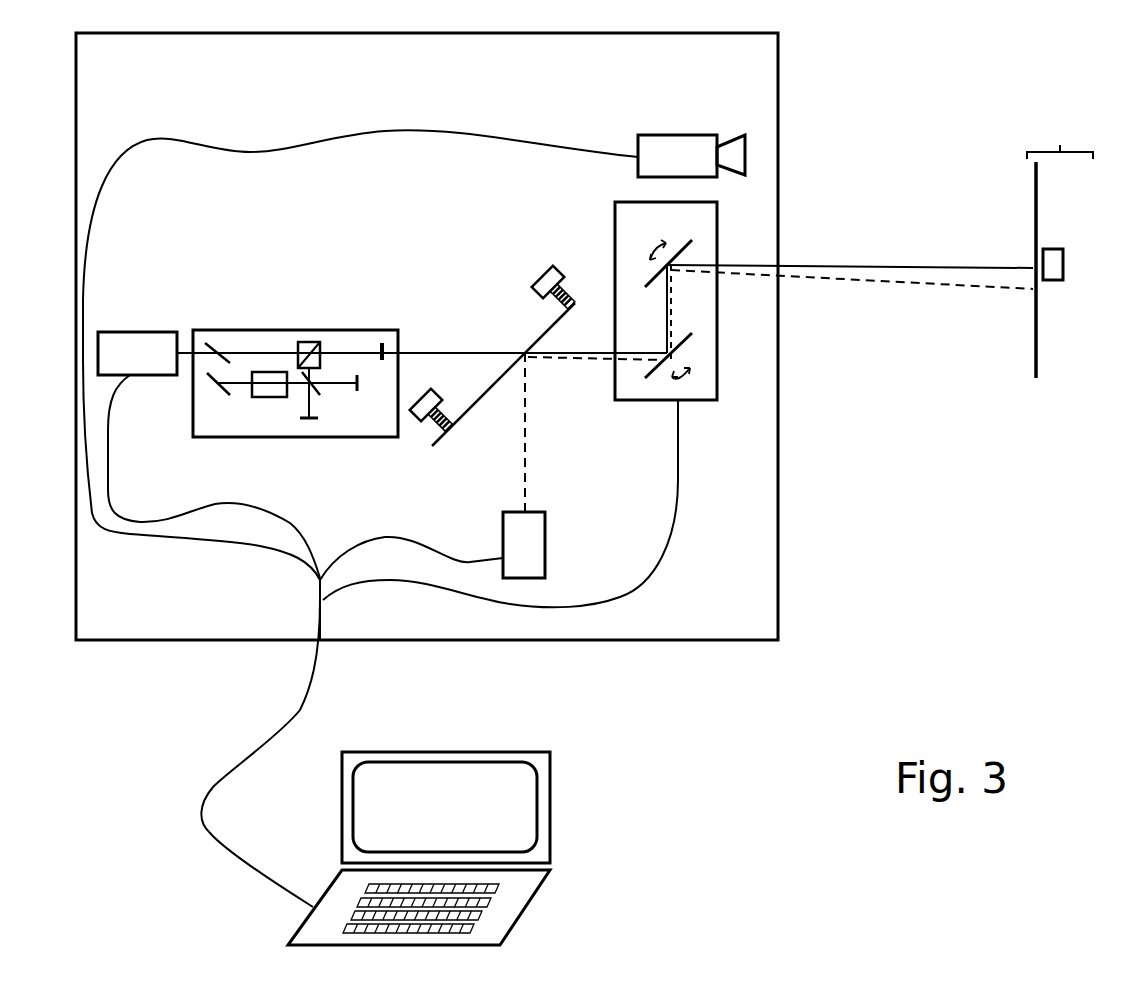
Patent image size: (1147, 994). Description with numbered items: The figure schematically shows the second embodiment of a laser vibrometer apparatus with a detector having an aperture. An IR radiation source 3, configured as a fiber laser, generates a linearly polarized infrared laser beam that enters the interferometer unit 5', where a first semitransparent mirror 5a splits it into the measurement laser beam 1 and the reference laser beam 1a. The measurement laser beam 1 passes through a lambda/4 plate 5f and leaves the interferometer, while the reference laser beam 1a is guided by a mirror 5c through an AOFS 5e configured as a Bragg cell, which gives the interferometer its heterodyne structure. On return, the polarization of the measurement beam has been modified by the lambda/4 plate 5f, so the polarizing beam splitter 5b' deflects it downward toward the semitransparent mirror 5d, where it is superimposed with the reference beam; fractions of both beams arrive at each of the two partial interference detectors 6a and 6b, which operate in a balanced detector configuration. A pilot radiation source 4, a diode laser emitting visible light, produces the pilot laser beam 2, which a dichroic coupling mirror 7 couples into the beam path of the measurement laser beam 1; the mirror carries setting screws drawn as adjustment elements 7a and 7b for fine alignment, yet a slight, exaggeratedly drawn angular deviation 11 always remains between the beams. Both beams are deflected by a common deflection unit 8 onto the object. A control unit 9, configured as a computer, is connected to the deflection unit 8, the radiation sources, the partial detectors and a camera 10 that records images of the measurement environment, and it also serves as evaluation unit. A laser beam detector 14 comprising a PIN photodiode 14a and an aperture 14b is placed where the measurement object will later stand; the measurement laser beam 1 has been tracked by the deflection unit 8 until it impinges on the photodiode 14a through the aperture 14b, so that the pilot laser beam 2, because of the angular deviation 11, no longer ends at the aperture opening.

The measurement laser beam 1 is at (487, 350).
The reference laser beam 1a is at (225, 384).
The pilot laser beam 2 is at (533, 462).
The IR radiation source 3 is at (143, 326).
The pilot radiation source 4 is at (549, 563).
The interferometer unit 5' is at (295, 357).
The semitransparent mirror 5a is at (207, 340).
The PBS (polarizing beam splitter) 5b' is at (332, 323).
The mirror 5c is at (220, 396).
The semitransparent mirror 5d is at (323, 397).
The AOFS (acousto-optic frequency shifter) 5e is at (270, 400).
The lambda/4 plate 5f is at (385, 332).
The interference detector 6a is at (310, 424).
The interference detector 6b is at (358, 396).
The coupling mirror 7 is at (468, 420).
The adjustment element 7a is at (432, 426).
The adjustment element 7b is at (547, 269).
The deflection unit 8 is at (613, 229).
The control unit 9 is at (557, 822).
The camera 10 is at (630, 140).
The angular deviation 11 is at (578, 362).
The laser beam detector 14 is at (1060, 241).
The photodiode 14a is at (1066, 266).
The aperture 14b is at (1038, 222).